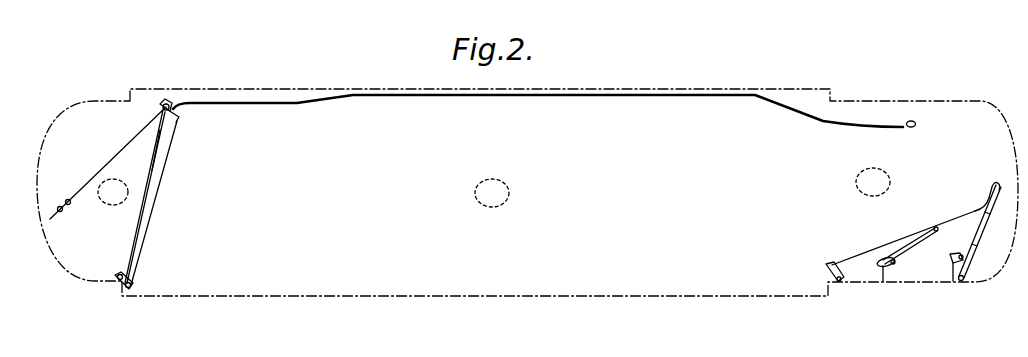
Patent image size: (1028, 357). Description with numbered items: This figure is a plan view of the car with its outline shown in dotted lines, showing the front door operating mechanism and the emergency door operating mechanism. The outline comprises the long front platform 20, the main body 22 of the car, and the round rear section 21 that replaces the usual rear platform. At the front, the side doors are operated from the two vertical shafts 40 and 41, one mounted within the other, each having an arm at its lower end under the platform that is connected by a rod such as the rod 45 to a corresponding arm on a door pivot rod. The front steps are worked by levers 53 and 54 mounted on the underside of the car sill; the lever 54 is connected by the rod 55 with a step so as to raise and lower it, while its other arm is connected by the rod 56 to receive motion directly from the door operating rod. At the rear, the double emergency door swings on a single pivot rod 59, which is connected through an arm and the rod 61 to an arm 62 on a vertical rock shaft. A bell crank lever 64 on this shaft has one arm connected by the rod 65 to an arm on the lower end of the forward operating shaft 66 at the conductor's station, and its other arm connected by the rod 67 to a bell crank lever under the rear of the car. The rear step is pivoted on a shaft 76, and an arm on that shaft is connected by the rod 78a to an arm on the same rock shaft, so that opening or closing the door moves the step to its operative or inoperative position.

The front platform 20 is at (873, 182).
The round rear section 21 is at (113, 192).
The main body 22 is at (492, 193).
The vertical shaft 40 is at (993, 186).
The vertical shaft 41 is at (988, 194).
The rod 45 is at (982, 236).
The lever 53 is at (961, 257).
The lever 54 is at (895, 264).
The rod 55 is at (883, 272).
The rod 56 is at (890, 249).
The pivot rod 59 is at (124, 277).
The rod 61 is at (156, 199).
The arm 62 is at (178, 118).
The bell crank lever 64 is at (170, 104).
The rod 65 is at (500, 98).
The forward operating shaft 66 is at (911, 121).
The rod 67 is at (123, 156).
The shaft 76 is at (898, 239).
The rod 78a is at (149, 170).